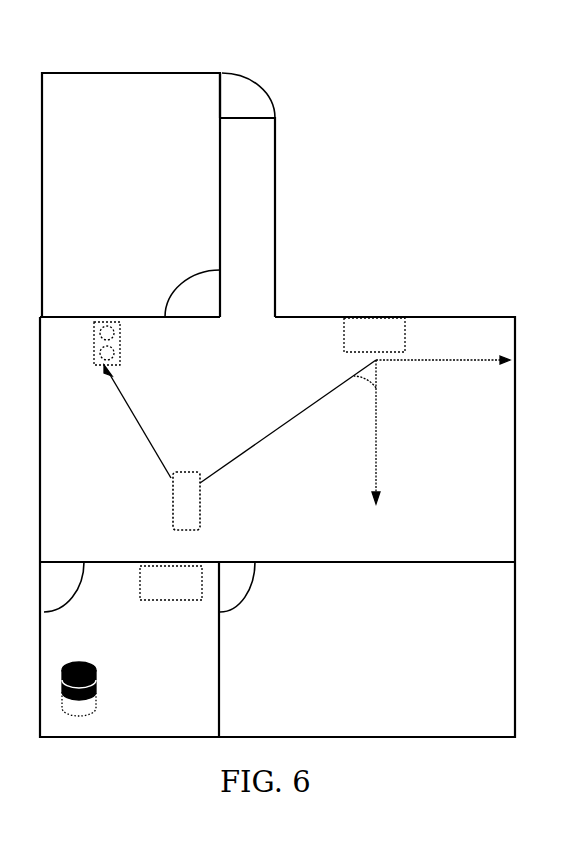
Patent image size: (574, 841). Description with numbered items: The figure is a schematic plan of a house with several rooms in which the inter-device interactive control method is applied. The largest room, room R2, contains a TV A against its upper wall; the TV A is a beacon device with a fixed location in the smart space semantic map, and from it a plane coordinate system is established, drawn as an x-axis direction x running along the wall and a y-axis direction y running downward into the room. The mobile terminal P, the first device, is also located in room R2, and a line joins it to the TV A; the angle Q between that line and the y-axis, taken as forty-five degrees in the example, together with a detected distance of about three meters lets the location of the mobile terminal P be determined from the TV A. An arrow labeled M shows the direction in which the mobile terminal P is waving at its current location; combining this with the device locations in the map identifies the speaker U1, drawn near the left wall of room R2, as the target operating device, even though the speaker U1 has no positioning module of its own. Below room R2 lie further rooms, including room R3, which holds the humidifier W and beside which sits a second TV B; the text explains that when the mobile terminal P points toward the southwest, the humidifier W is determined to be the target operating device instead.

The speaker U1 is at (117, 343).
The TV A is at (374, 335).
The TV B is at (171, 583).
The mobile terminal P is at (274, 454).
The waving direction M is at (137, 421).
The angle Q is at (364, 391).
The x-axis direction x is at (443, 367).
The y-axis direction y is at (376, 440).
The humidifier W is at (79, 698).
The room R2 is at (492, 549).
The room R3 is at (198, 723).